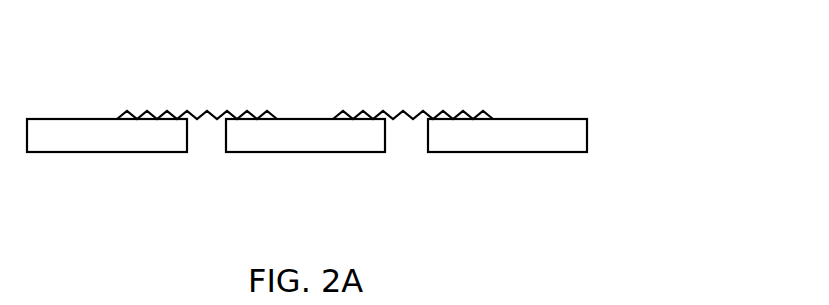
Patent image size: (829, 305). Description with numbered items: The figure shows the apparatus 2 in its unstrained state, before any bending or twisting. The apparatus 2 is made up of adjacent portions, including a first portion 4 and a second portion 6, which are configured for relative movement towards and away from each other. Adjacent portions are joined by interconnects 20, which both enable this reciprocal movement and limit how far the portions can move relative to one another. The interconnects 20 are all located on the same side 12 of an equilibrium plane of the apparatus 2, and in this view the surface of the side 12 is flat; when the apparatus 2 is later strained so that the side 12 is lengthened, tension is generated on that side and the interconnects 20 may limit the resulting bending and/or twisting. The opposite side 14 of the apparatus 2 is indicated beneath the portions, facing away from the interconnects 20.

The apparatus 2 is at (357, 128).
The first portion 4 is at (285, 142).
The second portion 6 is at (453, 142).
The side 12 is at (537, 97).
The second surface (bottom side) 14 is at (528, 163).
The interconnect 20 is at (187, 112).